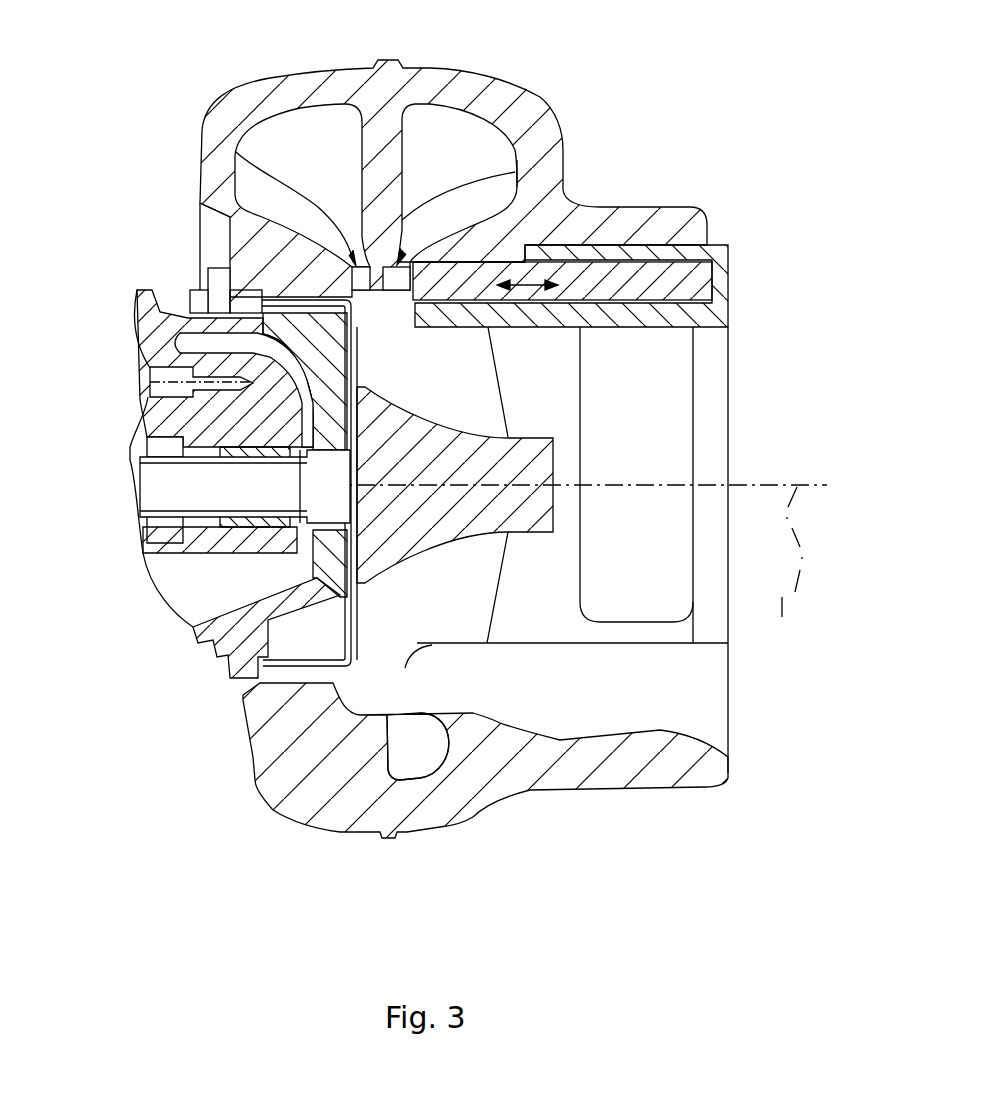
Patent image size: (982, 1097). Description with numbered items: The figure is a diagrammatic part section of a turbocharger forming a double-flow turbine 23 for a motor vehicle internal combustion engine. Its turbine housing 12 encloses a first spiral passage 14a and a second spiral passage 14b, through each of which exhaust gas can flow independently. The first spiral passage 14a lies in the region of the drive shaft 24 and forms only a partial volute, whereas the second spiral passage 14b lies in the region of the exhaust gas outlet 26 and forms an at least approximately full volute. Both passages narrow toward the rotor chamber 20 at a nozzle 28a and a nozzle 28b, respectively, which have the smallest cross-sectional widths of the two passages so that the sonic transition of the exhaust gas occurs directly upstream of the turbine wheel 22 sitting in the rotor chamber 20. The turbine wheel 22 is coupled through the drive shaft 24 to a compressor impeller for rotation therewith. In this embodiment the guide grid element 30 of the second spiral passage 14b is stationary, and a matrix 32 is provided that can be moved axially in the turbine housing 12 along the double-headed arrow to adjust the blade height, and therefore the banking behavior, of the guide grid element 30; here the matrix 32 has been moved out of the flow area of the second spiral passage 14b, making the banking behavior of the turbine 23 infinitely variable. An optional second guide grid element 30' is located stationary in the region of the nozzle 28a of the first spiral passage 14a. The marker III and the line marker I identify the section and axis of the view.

The turbine housing 12 is at (205, 165).
The first spiral passage 14a is at (313, 133).
The second spiral passage 14b is at (447, 137).
The nozzle 28a is at (215, 178).
The nozzle 28b is at (510, 133).
The guide grid element 30 is at (499, 196).
The second guide grid element 30' is at (245, 254).
The matrix 32 is at (660, 277).
The detail view marker III is at (548, 262).
The rotor chamber 20 is at (546, 383).
The turbine wheel 22 is at (450, 608).
The exhaust gas outlet 26 is at (713, 423).
The drive shaft 24 is at (152, 497).
The double-flow turbine 23 is at (167, 696).
The axis marker I is at (789, 554).